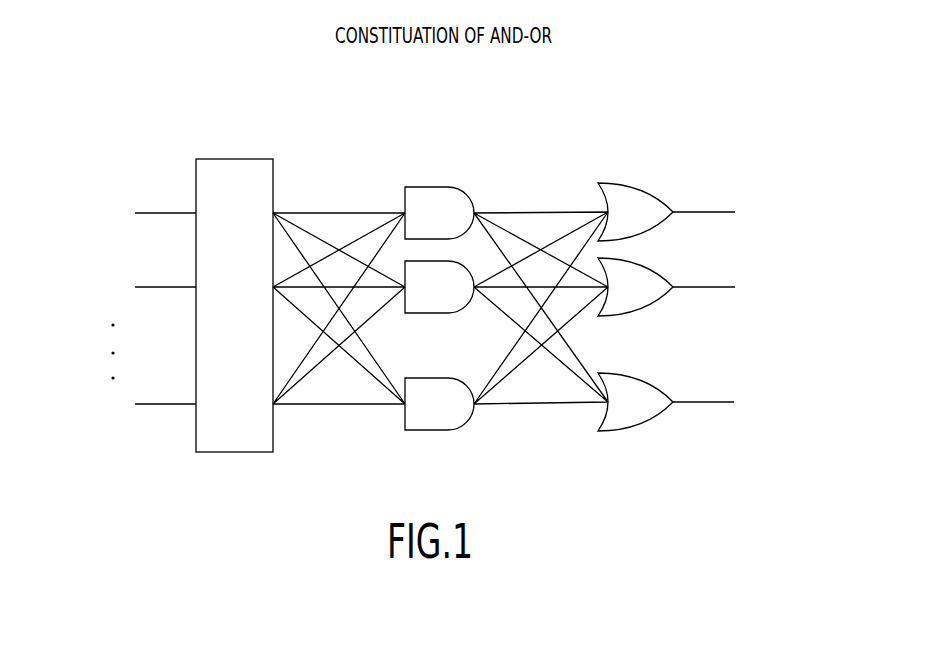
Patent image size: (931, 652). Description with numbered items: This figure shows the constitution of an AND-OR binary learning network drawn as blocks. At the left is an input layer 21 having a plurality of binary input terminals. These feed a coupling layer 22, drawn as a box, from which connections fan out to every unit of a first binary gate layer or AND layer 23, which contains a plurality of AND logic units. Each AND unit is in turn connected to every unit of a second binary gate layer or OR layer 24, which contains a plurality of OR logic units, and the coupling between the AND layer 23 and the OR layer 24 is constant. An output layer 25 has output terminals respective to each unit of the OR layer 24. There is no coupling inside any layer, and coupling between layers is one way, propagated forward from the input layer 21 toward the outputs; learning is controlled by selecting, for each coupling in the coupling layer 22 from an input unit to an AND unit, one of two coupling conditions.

The input layer 21 is at (110, 190).
The coupling layer 22 is at (233, 156).
The first binary gate layer (AND layer) 23 is at (427, 178).
The second binary gate layer (OR layer) 24 is at (620, 176).
The output layer 25 is at (750, 188).